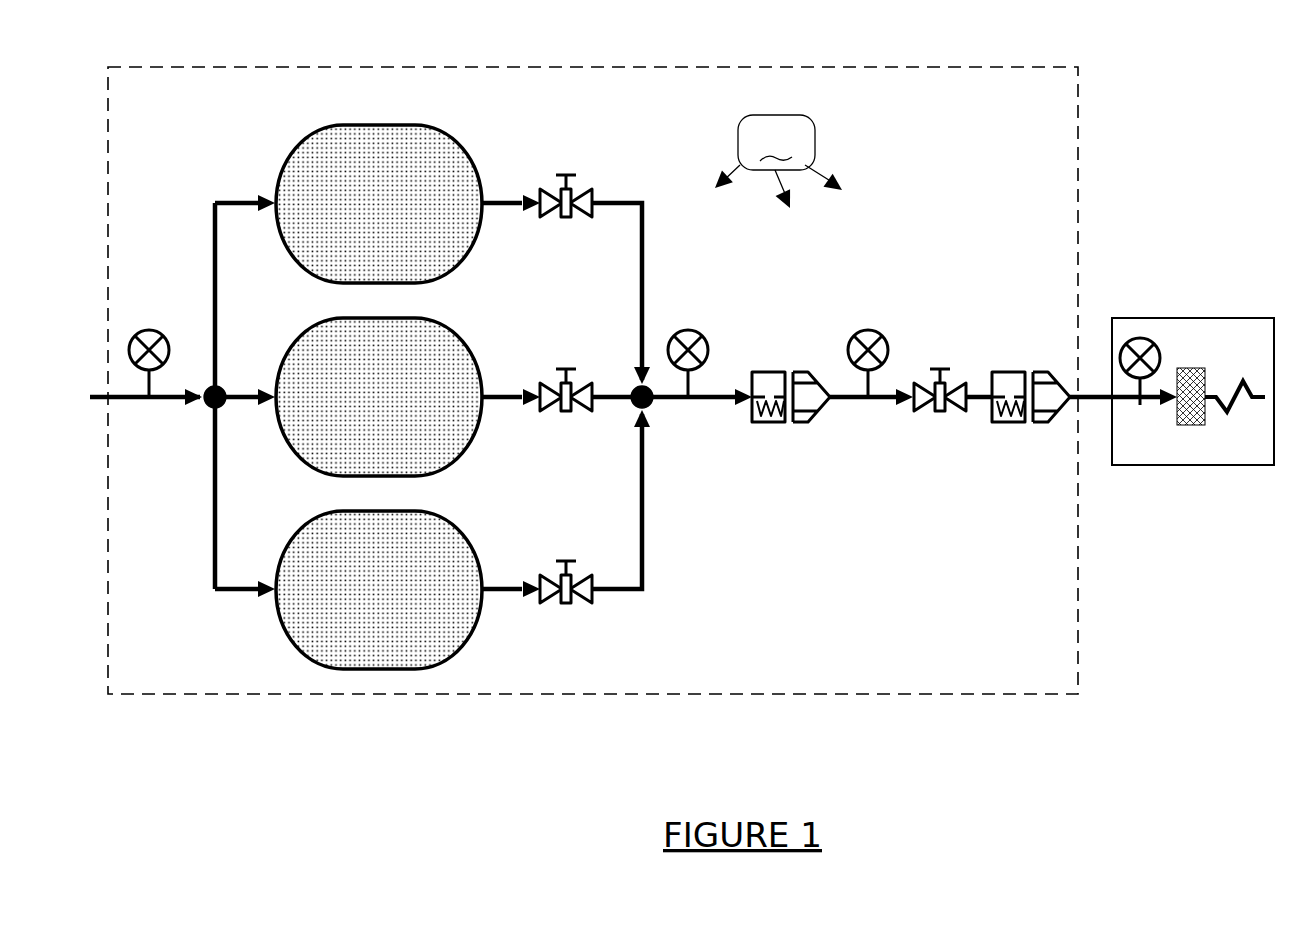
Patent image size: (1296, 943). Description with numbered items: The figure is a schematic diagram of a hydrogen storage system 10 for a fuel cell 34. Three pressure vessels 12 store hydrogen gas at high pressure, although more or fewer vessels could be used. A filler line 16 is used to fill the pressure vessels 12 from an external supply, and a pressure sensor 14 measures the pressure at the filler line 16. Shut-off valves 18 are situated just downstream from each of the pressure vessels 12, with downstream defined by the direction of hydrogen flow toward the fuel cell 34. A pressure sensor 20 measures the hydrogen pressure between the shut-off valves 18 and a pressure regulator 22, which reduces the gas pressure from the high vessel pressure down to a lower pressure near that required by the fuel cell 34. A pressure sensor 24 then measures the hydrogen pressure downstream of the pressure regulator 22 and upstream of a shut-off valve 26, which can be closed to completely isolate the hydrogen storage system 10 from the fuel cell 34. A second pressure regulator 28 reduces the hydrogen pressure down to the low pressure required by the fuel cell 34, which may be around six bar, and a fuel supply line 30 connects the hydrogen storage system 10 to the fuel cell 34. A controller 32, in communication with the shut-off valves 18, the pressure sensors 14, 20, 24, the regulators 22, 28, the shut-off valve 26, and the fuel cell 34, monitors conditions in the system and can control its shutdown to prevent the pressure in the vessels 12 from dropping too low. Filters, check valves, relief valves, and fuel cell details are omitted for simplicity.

The hydrogen storage system 10 is at (800, 60).
The pressure vessels 12 is at (445, 128).
The pressure sensor 14 is at (150, 330).
The filler line 16 is at (134, 400).
The shut-off valves 18 is at (589, 185).
The pressure sensor 20 is at (690, 330).
The pressure regulator 22 is at (772, 370).
The pressure sensor 24 is at (868, 330).
The shut-off valve 26 is at (960, 384).
The second pressure regulator 28 is at (1013, 370).
The fuel supply line 30 is at (1090, 395).
The controller 32 is at (778, 163).
The fuel cell 34 is at (1172, 468).